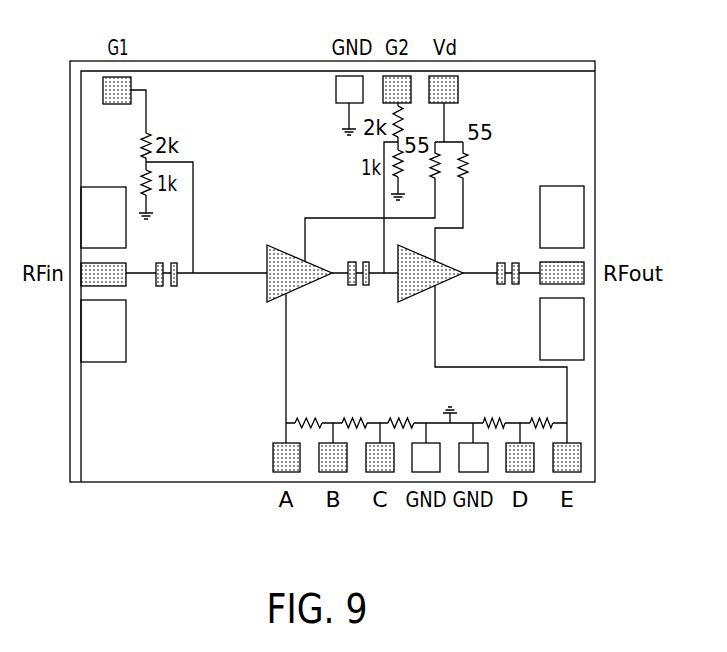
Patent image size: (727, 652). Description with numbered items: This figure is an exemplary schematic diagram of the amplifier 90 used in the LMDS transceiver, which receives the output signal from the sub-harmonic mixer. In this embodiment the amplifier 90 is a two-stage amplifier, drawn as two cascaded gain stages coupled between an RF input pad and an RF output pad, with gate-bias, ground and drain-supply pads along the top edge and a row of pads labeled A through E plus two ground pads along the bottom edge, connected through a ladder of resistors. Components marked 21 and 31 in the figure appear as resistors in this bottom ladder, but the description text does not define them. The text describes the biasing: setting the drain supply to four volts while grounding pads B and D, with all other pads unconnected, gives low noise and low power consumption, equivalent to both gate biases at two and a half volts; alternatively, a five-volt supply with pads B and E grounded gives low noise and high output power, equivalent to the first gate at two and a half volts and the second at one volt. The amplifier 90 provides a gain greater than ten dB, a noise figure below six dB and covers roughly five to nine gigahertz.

The resistor 21 is at (424, 410).
The resistor 31 is at (401, 410).
The amplifier 90 is at (113, 483).